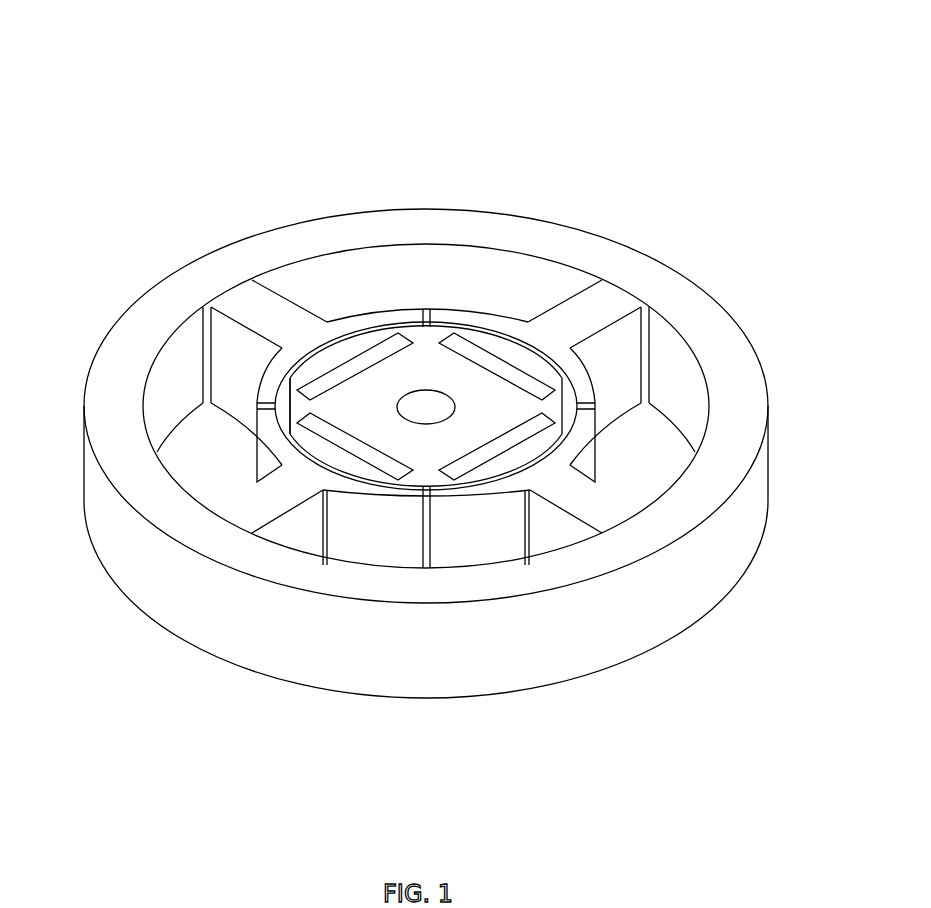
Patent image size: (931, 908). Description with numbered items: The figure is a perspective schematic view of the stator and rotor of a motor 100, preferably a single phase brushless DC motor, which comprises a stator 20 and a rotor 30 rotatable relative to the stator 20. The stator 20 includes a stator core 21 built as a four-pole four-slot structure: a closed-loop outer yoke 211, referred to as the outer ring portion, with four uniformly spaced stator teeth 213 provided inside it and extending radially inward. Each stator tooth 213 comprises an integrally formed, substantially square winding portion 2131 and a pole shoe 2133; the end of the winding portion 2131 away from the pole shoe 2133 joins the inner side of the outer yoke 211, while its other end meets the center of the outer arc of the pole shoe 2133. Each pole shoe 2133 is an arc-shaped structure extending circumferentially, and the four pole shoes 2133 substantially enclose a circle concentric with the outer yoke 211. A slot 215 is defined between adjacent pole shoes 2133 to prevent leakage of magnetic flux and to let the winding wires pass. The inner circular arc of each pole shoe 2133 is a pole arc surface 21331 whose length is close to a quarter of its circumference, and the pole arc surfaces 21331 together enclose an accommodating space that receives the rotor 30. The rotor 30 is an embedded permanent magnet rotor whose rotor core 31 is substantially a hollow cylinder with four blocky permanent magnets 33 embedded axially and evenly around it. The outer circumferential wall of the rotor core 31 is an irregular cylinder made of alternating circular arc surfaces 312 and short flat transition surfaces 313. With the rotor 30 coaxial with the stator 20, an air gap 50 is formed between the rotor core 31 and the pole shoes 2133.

The motor 100 is at (418, 57).
The stator 20 is at (143, 300).
The stator core 21 is at (800, 293).
The outer yoke 211 is at (537, 232).
The stator teeth 213 is at (812, 697).
The winding portion 2131 is at (602, 297).
The pole shoe 2133 is at (660, 520).
The pole arc surface 21331 is at (595, 361).
The slot 215 is at (683, 362).
The air gap 50 is at (352, 318).
The rotor 30 is at (222, 769).
The rotor core 31 is at (181, 706).
The circular arc surfaces 312 is at (335, 478).
The transition surfaces 313 is at (320, 420).
The permanent magnets 33 is at (387, 463).